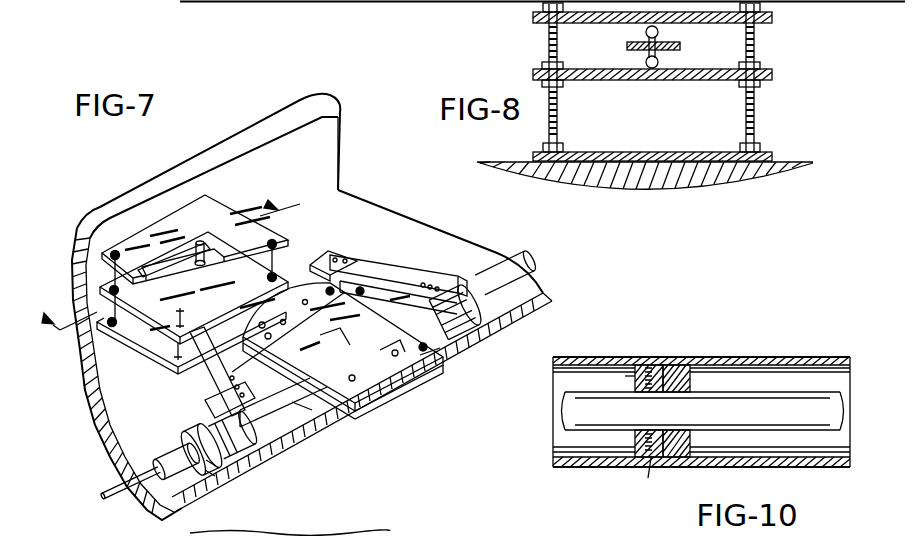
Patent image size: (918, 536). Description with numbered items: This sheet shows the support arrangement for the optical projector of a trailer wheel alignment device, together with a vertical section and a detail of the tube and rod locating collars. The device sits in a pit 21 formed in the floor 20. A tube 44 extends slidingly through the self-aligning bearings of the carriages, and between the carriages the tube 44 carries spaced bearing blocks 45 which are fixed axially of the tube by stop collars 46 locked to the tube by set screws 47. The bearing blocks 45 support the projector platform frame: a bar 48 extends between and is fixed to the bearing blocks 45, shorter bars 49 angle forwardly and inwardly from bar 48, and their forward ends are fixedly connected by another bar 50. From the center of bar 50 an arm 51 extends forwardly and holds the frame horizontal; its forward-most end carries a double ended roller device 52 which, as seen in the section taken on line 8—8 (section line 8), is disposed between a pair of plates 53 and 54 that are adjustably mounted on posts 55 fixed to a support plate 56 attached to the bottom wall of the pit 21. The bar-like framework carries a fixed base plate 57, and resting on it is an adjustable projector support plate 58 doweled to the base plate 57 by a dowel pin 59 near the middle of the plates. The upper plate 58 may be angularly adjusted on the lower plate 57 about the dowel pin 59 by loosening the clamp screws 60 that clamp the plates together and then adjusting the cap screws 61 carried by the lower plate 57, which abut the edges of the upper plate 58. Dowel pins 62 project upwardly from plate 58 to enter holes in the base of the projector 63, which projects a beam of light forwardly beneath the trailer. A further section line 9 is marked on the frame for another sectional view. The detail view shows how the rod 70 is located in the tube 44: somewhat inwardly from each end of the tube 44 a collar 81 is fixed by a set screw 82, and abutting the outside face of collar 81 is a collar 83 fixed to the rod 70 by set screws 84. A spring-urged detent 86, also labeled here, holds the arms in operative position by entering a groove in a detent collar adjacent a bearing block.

In FIG. 7, the section line 8— 8 is at (162, 252).
In FIG. 7, the section line 9- 9 is at (373, 379).
In FIG. 7, the floor 20 is at (322, 104).
In FIG. 7, the pit 21 is at (340, 165).
In FIG. 7, the tube 44 is at (516, 262).
In FIG. 10, the tube 44 is at (722, 357).
In FIG. 7, the bearing blocks 45 is at (480, 340).
In FIG. 7, the stop collars 46 is at (200, 425).
In FIG. 7, the set screws 47 is at (183, 445).
In FIG. 7, the bar 48 is at (200, 389).
In FIG. 7, the shorter bars 49 is at (402, 275).
In FIG. 7, the bar 50 is at (325, 266).
In FIG. 7, the arm 51 is at (217, 270).
In FIG. 8, the arm 51 is at (680, 46).
In FIG. 7, the double ended roller device 52 is at (200, 246).
In FIG. 8, the double ended roller device 52 is at (640, 58).
In FIG. 7, the plate 53 is at (140, 228).
In FIG. 8, the plate 53 is at (769, 25).
In FIG. 7, the plate 54 is at (147, 312).
In FIG. 8, the plate 54 is at (772, 77).
In FIG. 7, the posts 55 is at (276, 258).
In FIG. 8, the posts 55 is at (562, 116).
In FIG. 7, the support plate 56 is at (140, 348).
In FIG. 8, the support plate 56 is at (701, 157).
In FIG. 7, the base plate 57 is at (410, 395).
In FIG. 7, the projector support plate 58 is at (345, 432).
In FIG. 7, the dowel pin 59 is at (340, 328).
In FIG. 7, the clamp screws 60 is at (400, 333).
In FIG. 7, the cap screws 61 is at (352, 282).
In FIG. 7, the dowel pins 62 is at (330, 300).
In FIG. 7, the projector 63 is at (388, 533).
In FIG. 7, the rod 70 is at (120, 497).
In FIG. 10, the rod 70 is at (770, 395).
In FIG. 10, the collar 81 is at (694, 365).
In FIG. 10, the set screw 82 is at (661, 365).
In FIG. 10, the collars 83 is at (646, 478).
In FIG. 10, the set screws 84 is at (633, 377).
In FIG. 7, the detent 86 is at (220, 478).